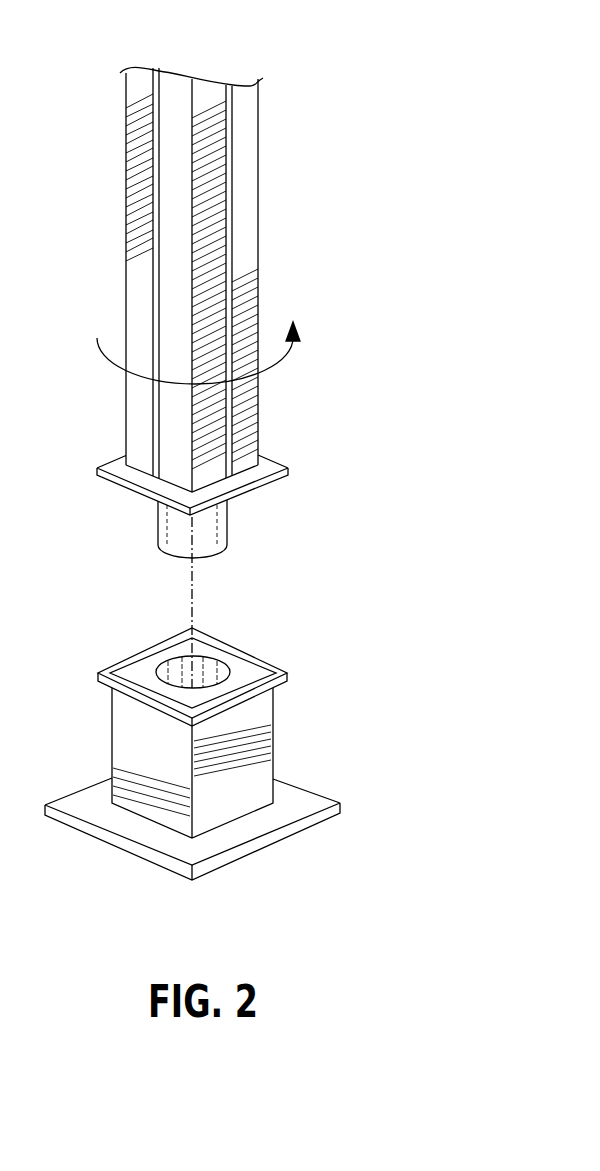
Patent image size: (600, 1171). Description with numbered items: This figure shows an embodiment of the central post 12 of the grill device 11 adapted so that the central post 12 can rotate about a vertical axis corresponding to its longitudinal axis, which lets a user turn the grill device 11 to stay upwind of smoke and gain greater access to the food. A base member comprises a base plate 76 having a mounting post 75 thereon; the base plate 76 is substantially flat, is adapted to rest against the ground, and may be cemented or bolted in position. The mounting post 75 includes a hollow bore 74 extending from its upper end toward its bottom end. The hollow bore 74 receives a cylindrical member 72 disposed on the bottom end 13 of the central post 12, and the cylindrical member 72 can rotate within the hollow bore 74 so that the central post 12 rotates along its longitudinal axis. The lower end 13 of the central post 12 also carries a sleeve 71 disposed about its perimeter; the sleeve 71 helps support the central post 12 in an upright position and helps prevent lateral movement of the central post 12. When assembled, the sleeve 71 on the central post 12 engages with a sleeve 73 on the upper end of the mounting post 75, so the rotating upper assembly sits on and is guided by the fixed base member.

The grill device 11 is at (402, 165).
The central post 12 is at (245, 272).
The bottom end 13 is at (180, 452).
The sleeve 71 is at (270, 458).
The cylindrical member 72 is at (212, 535).
The sleeve 73 is at (282, 665).
The hollow bore 74 is at (183, 675).
The mounting post 75 is at (247, 728).
The base plate 76 is at (272, 812).